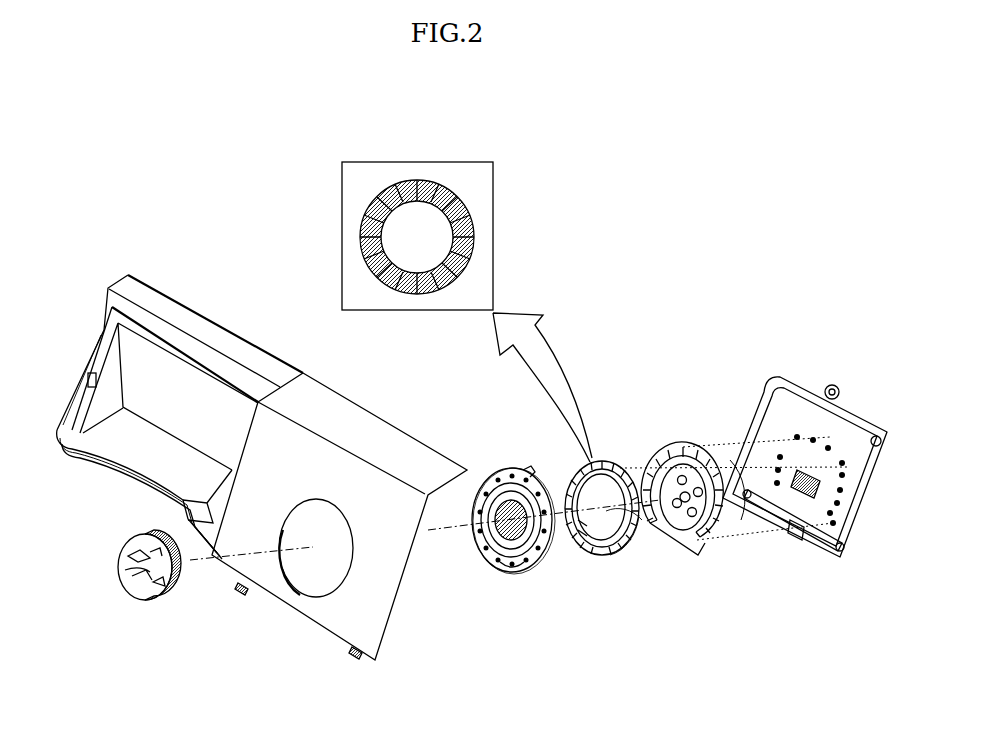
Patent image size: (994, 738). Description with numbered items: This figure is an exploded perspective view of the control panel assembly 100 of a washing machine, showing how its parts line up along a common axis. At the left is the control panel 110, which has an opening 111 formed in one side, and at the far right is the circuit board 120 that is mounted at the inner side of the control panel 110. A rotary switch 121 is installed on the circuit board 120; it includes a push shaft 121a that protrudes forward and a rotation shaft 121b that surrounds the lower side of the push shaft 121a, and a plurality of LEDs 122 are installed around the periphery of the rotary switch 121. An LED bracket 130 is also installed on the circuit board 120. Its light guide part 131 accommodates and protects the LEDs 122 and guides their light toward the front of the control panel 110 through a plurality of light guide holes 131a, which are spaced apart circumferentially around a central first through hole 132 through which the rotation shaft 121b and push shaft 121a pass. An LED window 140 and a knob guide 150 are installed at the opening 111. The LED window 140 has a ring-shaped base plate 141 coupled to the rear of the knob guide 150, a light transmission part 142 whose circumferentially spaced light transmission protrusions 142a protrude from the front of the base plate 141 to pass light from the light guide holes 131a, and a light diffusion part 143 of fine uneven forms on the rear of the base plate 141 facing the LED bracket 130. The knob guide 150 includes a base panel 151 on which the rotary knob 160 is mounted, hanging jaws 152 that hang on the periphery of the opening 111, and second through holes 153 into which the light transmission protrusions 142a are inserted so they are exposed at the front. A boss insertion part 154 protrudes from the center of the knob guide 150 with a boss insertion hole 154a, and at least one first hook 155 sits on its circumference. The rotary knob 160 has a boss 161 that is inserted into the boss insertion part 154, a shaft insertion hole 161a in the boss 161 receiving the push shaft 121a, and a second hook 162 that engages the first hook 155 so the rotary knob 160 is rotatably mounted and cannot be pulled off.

The control panel assembly 100 is at (581, 268).
The control panel 110 is at (385, 634).
The opening 111 is at (318, 519).
The circuit board 120 is at (807, 507).
The rotary switch 121 is at (814, 500).
The push shaft 121a is at (785, 541).
The rotation shaft 121b is at (847, 558).
The LEDs 122 is at (834, 447).
The LED bracket 130 is at (717, 486).
The light guide part 131 is at (717, 442).
The light guide holes 131a is at (696, 450).
The first through hole 132 is at (684, 449).
The LED window 140 is at (618, 516).
The ring-shaped base plate 141 is at (582, 557).
The light transmission part 142 is at (618, 471).
The light transmission protrusions 142a is at (610, 459).
The light diffusion part 143 is at (415, 182).
The knob guide 150 is at (505, 542).
The base panel 151 is at (493, 555).
The hanging jaws 152 is at (530, 580).
The second through holes 153 is at (510, 573).
The boss insertion part 154 is at (513, 468).
The boss insertion hole 154a is at (473, 509).
The first hook 155 is at (543, 468).
The rotary knob 160 is at (139, 615).
The boss 161 is at (121, 573).
The shaft insertion hole 161a is at (145, 598).
The second hook 162 is at (118, 552).